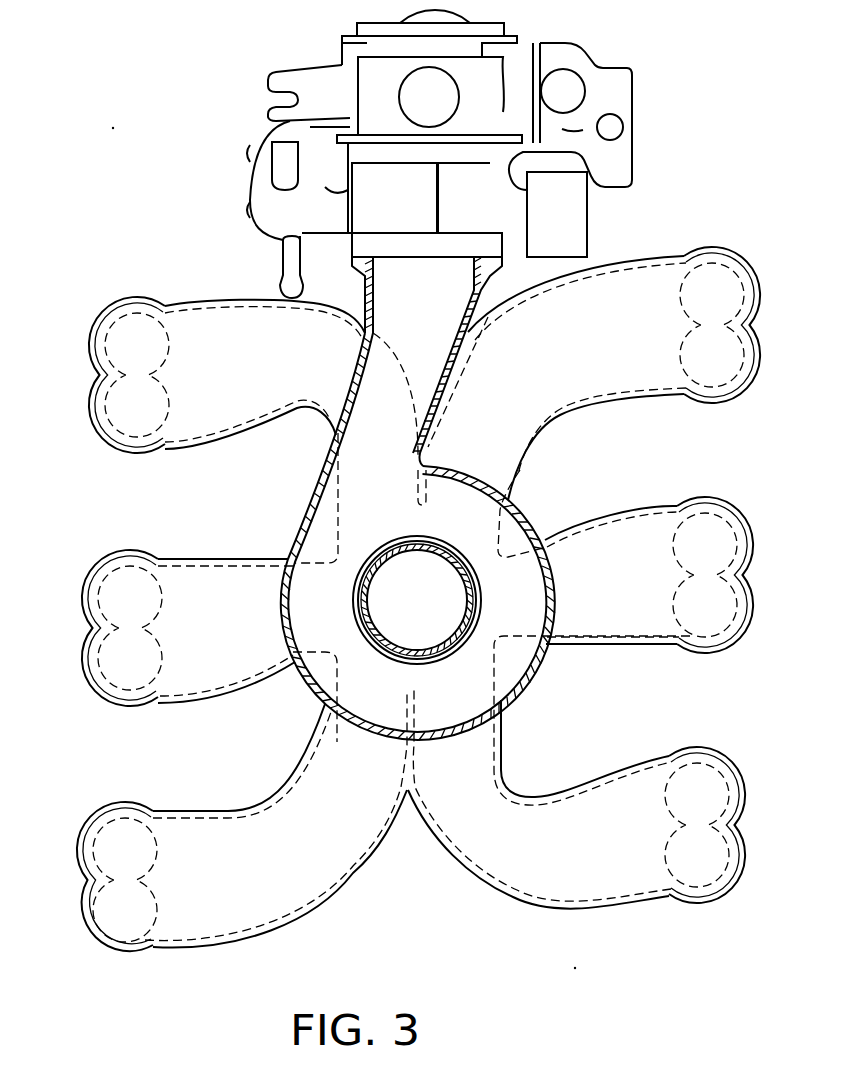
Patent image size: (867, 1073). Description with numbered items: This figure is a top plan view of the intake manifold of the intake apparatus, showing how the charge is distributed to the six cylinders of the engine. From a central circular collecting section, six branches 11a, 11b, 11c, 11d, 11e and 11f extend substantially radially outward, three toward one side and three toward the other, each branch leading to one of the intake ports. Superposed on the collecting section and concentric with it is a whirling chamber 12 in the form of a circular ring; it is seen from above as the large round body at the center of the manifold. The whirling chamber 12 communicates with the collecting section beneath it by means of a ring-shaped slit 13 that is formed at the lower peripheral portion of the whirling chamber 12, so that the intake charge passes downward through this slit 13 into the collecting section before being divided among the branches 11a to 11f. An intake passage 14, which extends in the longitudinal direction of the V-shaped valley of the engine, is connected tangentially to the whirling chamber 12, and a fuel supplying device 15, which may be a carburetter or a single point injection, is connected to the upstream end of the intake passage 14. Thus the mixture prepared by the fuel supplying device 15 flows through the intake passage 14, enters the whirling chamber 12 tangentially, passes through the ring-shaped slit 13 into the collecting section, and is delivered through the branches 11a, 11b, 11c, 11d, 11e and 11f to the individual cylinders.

The branch 11a is at (180, 300).
The branch 11b is at (193, 558).
The branch 11c is at (195, 810).
The branch 11d is at (627, 762).
The branch 11e is at (632, 503).
The branch 11f is at (658, 257).
The whirling chamber 12 is at (470, 505).
The ring-shaped slit 13 is at (462, 647).
The intake passage 14 is at (397, 290).
The fuel supplying device 15 is at (370, 82).